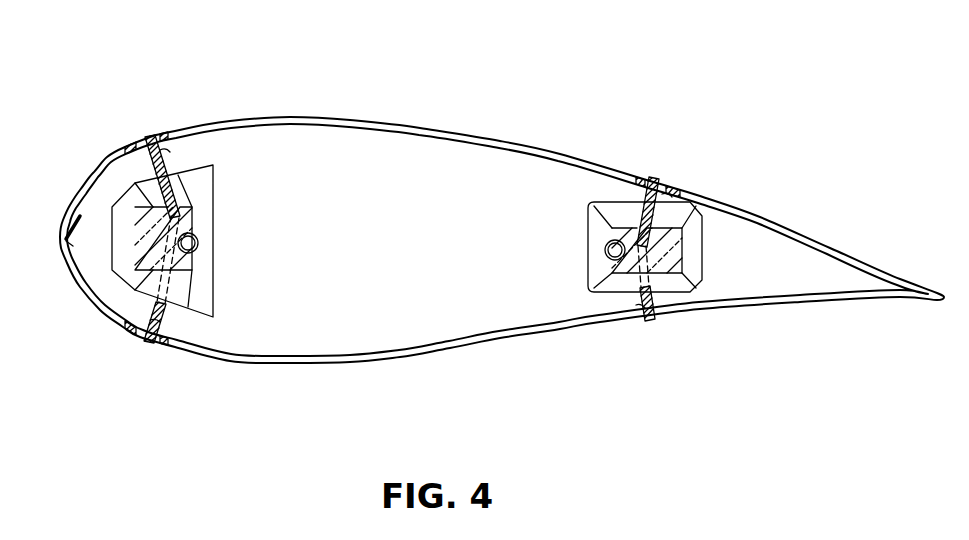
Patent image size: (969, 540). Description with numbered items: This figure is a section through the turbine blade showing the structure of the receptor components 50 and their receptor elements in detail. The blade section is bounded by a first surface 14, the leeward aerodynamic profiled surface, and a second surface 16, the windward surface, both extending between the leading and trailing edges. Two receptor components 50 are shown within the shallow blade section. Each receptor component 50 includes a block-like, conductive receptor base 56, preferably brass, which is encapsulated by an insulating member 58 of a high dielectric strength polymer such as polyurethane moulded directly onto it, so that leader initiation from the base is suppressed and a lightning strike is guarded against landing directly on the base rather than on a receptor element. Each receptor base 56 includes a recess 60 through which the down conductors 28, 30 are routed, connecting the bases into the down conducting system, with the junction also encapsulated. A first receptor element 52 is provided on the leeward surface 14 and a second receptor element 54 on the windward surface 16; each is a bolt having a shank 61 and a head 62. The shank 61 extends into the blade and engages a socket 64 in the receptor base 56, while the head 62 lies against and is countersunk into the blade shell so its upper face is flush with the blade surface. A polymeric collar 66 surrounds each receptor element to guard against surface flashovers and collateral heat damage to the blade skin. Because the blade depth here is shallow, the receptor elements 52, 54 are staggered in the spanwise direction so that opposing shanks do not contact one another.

The first surface 14 is at (820, 238).
The second surface 16 is at (800, 302).
The down conductor 28 is at (199, 243).
The down conductor 30 is at (604, 250).
The receptor component 50 is at (196, 80).
The first receptor element 52 is at (106, 147).
The second receptor element 54 is at (161, 362).
The receptor base 56 is at (183, 205).
The insulating member 58 is at (210, 284).
The recess 60 is at (195, 217).
The shank 61 is at (170, 158).
The head 62 is at (152, 136).
The socket 64 is at (135, 208).
The polymeric collar 66 is at (130, 148).